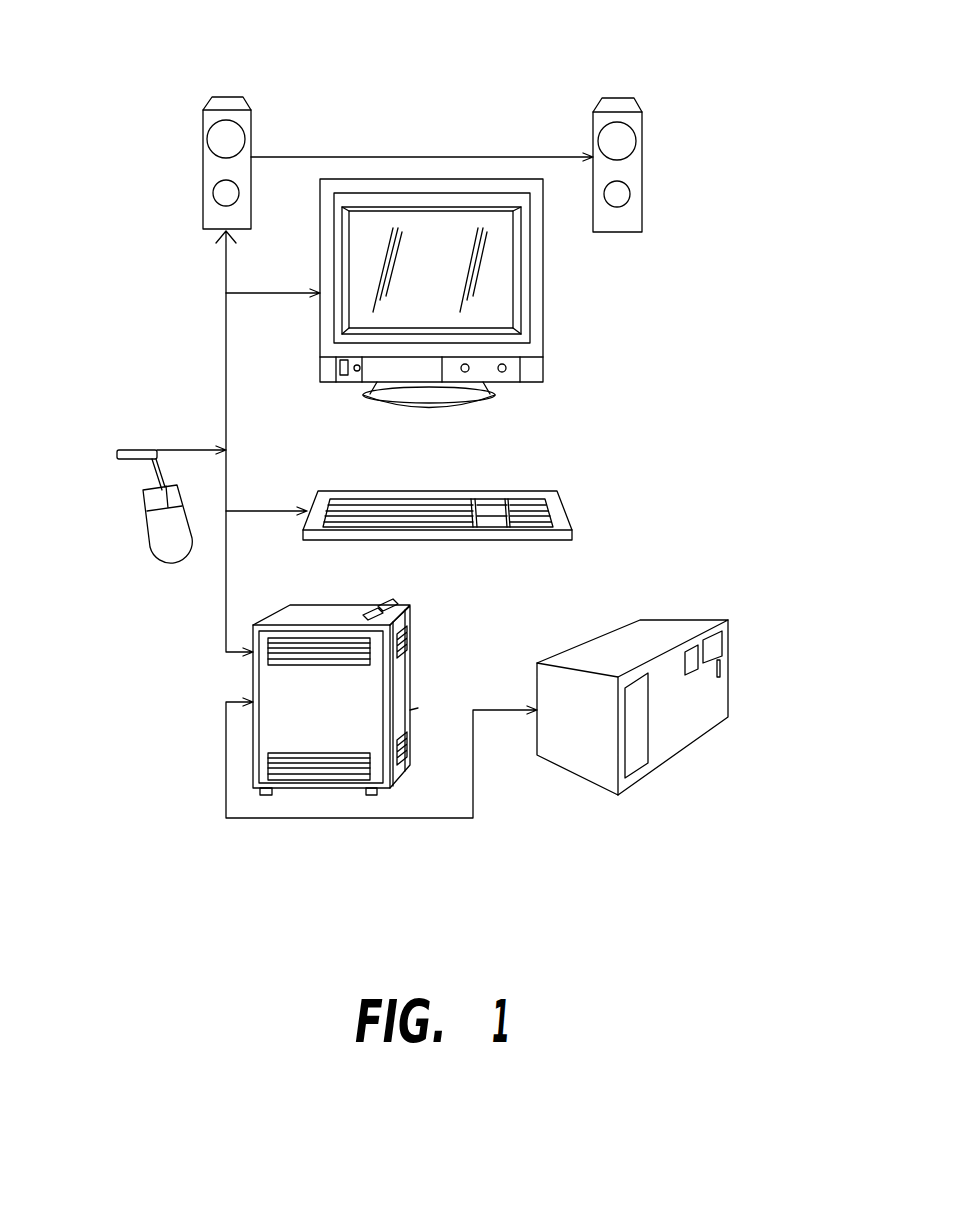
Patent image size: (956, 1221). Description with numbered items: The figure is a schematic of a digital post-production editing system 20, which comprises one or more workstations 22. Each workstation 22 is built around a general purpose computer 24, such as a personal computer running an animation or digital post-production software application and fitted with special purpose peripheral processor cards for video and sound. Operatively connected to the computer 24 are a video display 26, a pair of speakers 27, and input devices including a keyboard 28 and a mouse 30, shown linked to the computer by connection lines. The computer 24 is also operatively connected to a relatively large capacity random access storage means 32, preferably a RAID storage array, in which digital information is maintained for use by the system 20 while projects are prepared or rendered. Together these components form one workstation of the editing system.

The digital post-production editing system 20 is at (268, 49).
The workstation 22 is at (711, 381).
The general purpose computer 24 is at (393, 603).
The video display 26 is at (543, 354).
The speakers 27 is at (203, 232).
The keyboard 28 is at (565, 497).
The mouse 30 is at (150, 547).
The random access storage means 32 is at (693, 618).